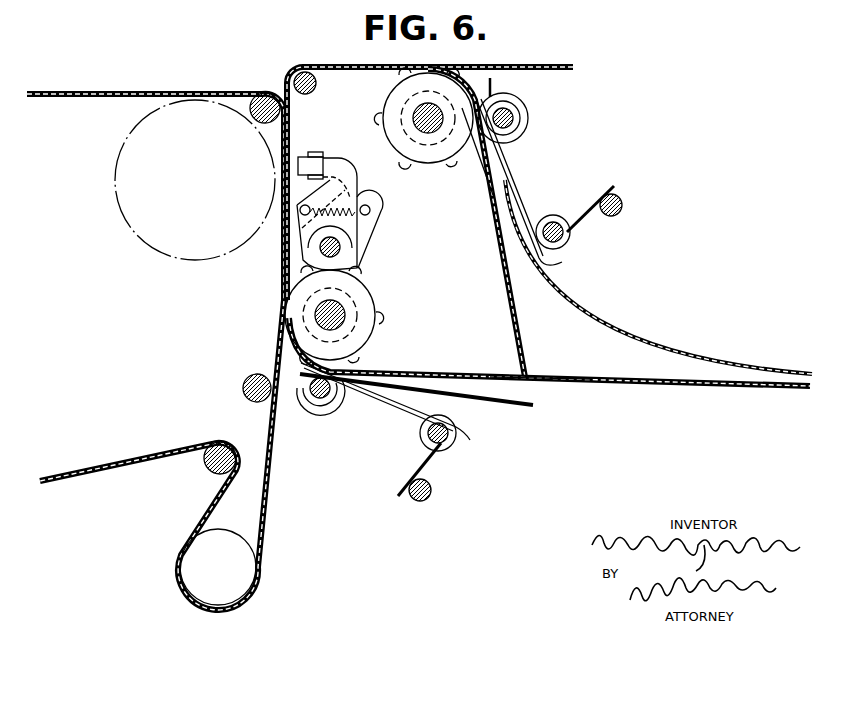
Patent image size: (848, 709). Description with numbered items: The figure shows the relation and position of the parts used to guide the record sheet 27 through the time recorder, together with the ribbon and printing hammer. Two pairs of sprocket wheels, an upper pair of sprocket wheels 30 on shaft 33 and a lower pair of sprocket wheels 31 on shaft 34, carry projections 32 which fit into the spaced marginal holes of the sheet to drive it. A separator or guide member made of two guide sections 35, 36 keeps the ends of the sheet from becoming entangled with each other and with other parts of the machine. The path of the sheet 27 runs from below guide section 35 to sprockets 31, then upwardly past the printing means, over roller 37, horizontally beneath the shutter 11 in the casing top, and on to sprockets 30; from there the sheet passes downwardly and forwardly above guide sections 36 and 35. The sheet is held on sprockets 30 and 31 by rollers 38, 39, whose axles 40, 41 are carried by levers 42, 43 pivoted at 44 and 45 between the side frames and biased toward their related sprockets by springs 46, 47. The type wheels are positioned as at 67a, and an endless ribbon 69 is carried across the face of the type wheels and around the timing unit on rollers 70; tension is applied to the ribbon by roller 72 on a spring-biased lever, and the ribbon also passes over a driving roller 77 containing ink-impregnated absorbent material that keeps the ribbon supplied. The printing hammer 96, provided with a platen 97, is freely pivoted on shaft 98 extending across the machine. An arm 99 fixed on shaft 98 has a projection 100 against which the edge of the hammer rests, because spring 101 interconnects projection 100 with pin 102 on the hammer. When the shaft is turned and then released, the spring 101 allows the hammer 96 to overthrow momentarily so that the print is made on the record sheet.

The shutter 11 is at (518, 66).
The record sheet 27 is at (606, 331).
The upper sprocket wheels 30 is at (441, 153).
The lower sprocket wheels 31 is at (369, 301).
The projections 32 is at (452, 166).
The shaft 33 is at (427, 133).
The shaft 34 is at (341, 326).
The guide section 35 is at (445, 374).
The guide section 36 is at (521, 340).
The roller 37 is at (318, 84).
The roller 38 is at (522, 101).
The roller 39 is at (307, 402).
The axle 40 is at (517, 118).
The axle 41 is at (320, 400).
The lever 42 is at (511, 156).
The lever 43 is at (355, 387).
The pivot 44 is at (554, 221).
The pivot 45 is at (427, 434).
The spring 46 is at (585, 210).
The spring 47 is at (411, 473).
The type wheels 67a is at (162, 249).
The endless ribbon 69 is at (78, 97).
The rollers 70 is at (251, 116).
The roller 72 is at (205, 463).
The driving roller 77 is at (219, 546).
The printing hammer 96 is at (305, 233).
The platen 97 is at (300, 157).
The shaft 98 is at (341, 251).
The arm 99 is at (367, 229).
The projection 100 is at (371, 211).
The spring 101 is at (352, 186).
The pin 102 is at (300, 211).